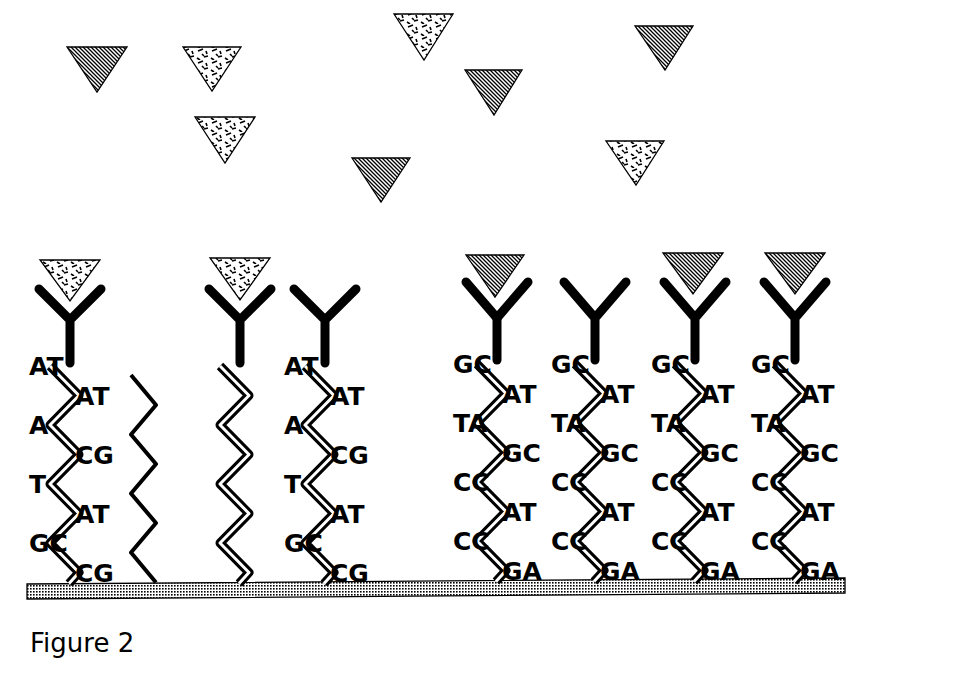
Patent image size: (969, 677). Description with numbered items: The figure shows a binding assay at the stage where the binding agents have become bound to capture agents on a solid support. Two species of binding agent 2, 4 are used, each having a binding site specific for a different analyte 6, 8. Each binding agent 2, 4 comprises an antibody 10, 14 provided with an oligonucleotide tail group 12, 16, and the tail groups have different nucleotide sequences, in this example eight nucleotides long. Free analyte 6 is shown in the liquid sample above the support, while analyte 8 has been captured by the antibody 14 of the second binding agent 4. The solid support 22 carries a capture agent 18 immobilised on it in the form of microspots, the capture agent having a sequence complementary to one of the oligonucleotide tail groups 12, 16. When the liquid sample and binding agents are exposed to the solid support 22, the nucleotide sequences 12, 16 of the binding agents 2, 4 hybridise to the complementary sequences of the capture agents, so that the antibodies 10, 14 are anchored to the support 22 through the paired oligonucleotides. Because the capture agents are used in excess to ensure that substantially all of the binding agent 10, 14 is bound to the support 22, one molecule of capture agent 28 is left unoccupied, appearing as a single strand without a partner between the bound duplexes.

The binding agent 2 is at (218, 423).
The binding agent 4 is at (482, 321).
The analyte 6 is at (204, 142).
The analyte 8 is at (498, 250).
The antibody 10 is at (215, 306).
The oligonucleotide tail group 12 is at (216, 460).
The antibody 14 is at (447, 323).
The oligonucleotide tail group 16 is at (498, 429).
The capture agent 18 is at (262, 364).
The solid support 22 is at (449, 601).
The capture agent 28 is at (148, 378).